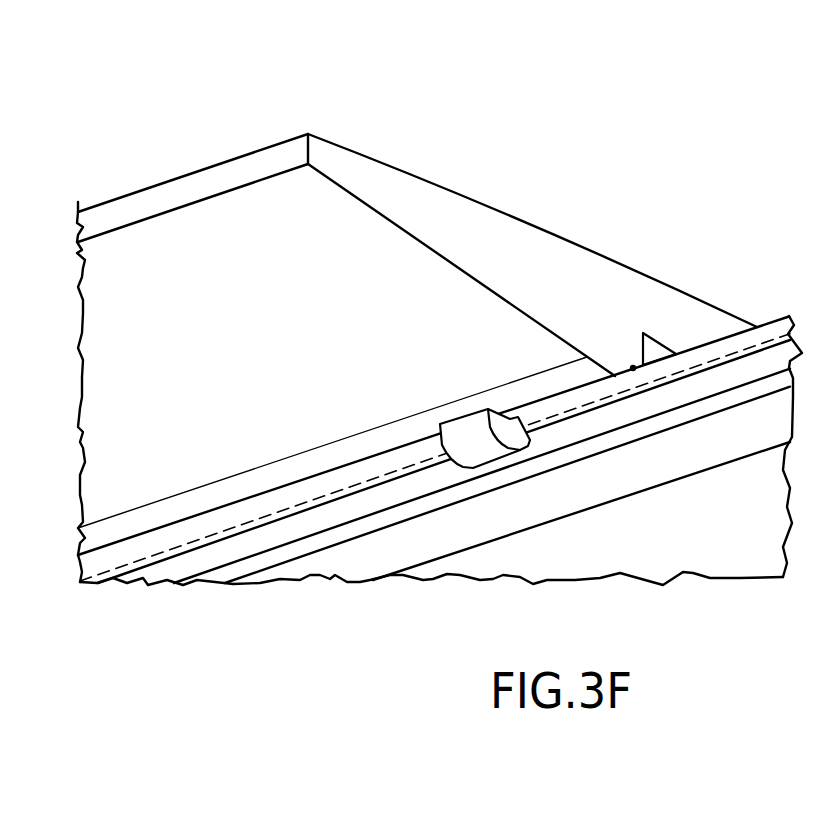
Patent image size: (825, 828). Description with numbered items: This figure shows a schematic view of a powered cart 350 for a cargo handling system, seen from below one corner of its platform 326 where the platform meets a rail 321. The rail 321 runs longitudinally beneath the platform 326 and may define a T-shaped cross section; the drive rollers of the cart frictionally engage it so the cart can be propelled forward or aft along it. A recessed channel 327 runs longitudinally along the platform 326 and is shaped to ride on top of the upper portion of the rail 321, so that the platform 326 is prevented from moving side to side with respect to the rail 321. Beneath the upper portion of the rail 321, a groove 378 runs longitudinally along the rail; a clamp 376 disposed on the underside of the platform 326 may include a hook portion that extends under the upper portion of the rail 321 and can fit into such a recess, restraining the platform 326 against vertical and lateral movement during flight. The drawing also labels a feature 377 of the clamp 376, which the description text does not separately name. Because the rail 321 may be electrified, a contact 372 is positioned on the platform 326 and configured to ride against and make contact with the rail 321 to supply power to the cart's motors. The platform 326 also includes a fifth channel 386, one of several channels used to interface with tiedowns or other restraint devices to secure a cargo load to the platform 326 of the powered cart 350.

The powered cart 350 is at (527, 118).
The fifth channel 386 is at (323, 134).
The platform 326 is at (542, 229).
The contact 372 is at (632, 366).
The recessed channel 327 is at (662, 344).
The clip arm 377 is at (516, 440).
The clamp 376 is at (458, 435).
The groove 378 is at (617, 397).
The rail 321 is at (300, 578).